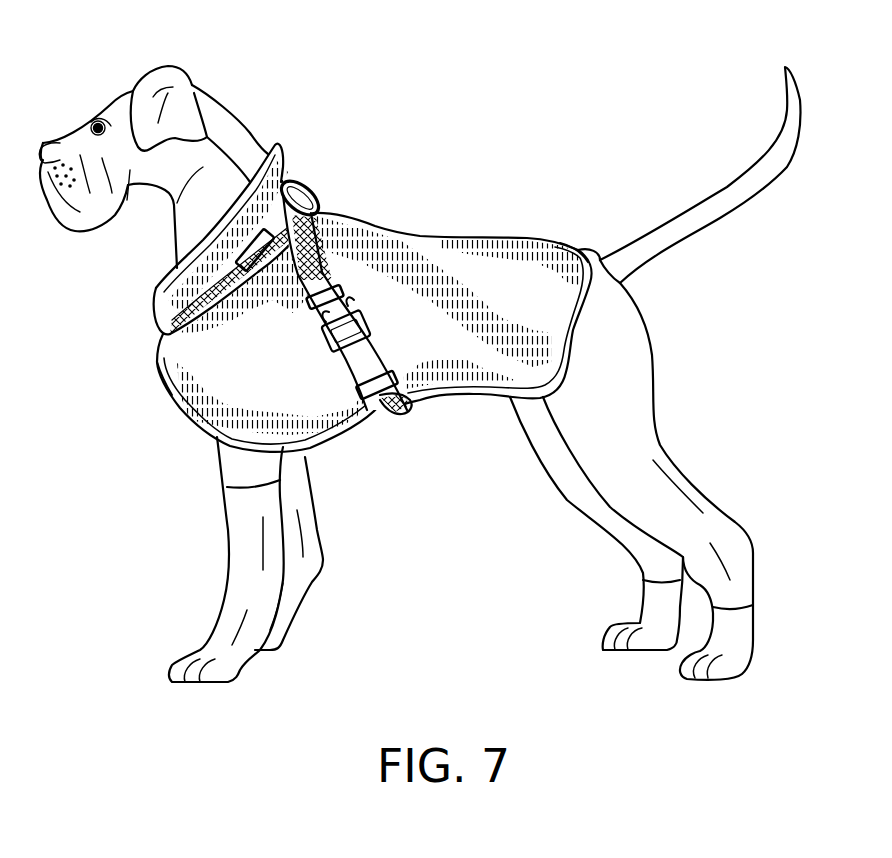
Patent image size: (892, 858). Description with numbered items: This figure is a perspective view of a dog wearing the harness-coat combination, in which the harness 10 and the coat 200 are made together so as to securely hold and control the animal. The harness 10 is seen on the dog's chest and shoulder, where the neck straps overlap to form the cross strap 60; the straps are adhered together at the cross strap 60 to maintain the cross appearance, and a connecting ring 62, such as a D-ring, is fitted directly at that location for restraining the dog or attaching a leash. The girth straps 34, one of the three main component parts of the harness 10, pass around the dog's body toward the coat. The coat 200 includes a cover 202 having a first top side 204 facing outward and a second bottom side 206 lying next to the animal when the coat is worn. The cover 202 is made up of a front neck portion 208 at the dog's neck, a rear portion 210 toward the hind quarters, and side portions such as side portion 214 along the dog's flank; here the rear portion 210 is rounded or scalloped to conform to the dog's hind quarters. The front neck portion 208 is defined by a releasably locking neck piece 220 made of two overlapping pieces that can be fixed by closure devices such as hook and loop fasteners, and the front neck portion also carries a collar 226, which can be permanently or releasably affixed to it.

The harness 10 is at (259, 285).
The girth straps 34 is at (375, 375).
The cross strap 60 is at (367, 295).
The connecting ring 62 is at (292, 185).
The coat 200 is at (344, 331).
The cover 202 is at (493, 250).
The first top side 204 is at (423, 247).
The second bottom side 206 is at (350, 445).
The front neck portion 208 is at (184, 239).
The rear portion 210 is at (580, 250).
The side portion 214 is at (488, 360).
The releasably locking neck piece 220 is at (167, 393).
The collar 226 is at (215, 245).